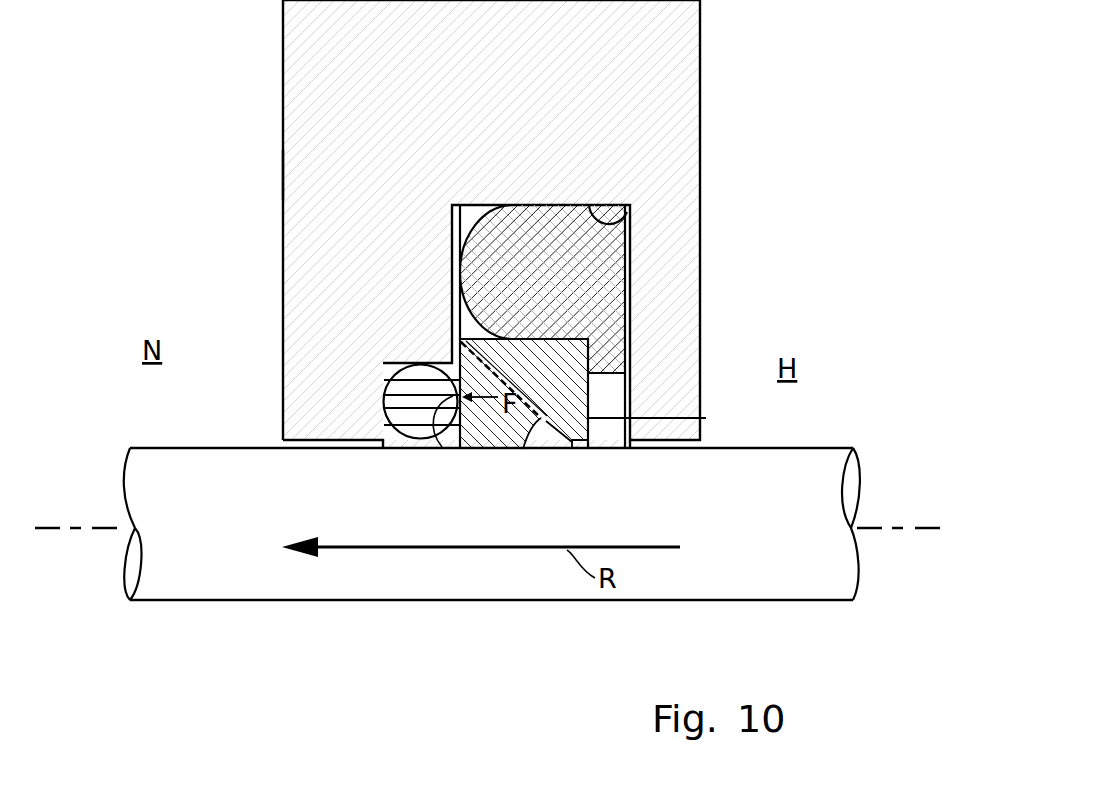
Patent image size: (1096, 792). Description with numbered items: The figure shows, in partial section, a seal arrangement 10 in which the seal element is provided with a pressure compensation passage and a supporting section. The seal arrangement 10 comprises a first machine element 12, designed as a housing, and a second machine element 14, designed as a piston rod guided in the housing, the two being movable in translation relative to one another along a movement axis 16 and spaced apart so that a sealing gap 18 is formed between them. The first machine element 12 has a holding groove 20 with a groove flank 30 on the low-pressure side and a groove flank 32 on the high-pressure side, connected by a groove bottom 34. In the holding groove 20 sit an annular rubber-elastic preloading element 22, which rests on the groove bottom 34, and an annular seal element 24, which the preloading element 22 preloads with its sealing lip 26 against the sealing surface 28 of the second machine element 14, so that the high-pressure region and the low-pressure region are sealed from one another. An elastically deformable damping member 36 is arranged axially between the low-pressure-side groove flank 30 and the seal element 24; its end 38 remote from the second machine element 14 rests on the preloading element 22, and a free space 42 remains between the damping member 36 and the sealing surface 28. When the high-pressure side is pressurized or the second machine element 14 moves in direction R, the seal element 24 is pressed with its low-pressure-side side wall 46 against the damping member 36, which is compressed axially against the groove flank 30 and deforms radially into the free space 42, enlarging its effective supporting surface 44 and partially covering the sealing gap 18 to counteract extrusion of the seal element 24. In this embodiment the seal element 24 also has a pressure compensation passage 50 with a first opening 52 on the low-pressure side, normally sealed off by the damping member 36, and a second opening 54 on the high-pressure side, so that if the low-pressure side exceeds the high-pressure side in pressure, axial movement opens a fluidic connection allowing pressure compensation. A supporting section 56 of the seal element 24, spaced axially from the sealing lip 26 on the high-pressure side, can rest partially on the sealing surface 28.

The seal arrangement 10 is at (774, 126).
The first machine element 12 is at (548, 224).
The second machine element 14 is at (492, 524).
The movement axis 16 is at (72, 533).
The sealing gap 18 is at (661, 438).
The holding groove 20 is at (598, 383).
The preloading element 22 is at (544, 326).
The seal element 24 is at (520, 394).
The sealing lip 26 is at (512, 447).
The sealing surface 28 is at (757, 448).
The groove flank arranged on the low-pressure side 30 is at (416, 405).
The groove flank arranged on the high-pressure side 32 is at (628, 388).
The groove bottom 34 is at (628, 226).
The damping member 36 is at (427, 432).
The end of the damping member remote from the second machine element 38 is at (420, 372).
The free space 42 is at (402, 443).
The effective supporting surface 44 is at (253, 175).
The low-pressure-side side wall 46 is at (460, 423).
The pressure compensation passage 50 is at (547, 420).
The first opening 52 is at (453, 341).
The second opening 54 is at (706, 418).
The supporting section 56 is at (586, 436).